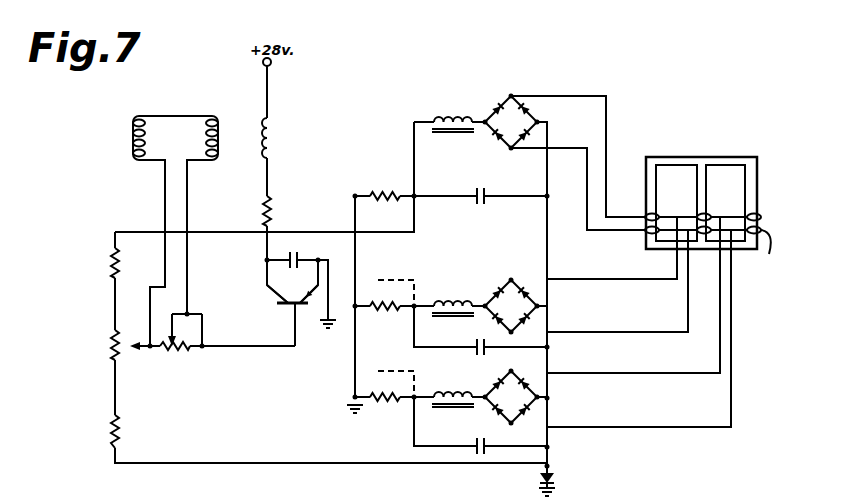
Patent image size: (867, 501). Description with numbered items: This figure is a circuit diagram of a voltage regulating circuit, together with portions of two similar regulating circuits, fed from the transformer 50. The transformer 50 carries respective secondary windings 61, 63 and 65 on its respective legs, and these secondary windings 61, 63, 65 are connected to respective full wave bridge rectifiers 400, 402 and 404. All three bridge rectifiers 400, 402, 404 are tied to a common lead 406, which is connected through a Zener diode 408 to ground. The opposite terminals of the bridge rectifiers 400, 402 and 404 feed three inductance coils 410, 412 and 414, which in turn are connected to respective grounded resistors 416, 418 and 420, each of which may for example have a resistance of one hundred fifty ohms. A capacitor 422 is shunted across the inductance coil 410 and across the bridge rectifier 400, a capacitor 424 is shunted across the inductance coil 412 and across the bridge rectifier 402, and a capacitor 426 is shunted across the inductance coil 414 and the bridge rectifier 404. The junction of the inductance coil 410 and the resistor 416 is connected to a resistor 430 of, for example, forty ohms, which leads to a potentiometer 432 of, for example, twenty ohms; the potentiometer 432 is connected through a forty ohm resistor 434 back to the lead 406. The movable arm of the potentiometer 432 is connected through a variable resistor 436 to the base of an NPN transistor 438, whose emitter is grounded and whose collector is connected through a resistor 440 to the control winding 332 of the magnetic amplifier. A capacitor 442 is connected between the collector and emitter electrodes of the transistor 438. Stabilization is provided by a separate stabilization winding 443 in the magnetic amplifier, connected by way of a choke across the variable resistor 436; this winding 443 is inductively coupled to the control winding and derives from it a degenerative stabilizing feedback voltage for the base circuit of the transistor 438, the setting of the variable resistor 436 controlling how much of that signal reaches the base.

The transformer 50 is at (706, 148).
The secondary winding 61 is at (662, 218).
The secondary winding 63 is at (712, 218).
The secondary winding 65 is at (762, 252).
The control winding 332 is at (272, 140).
The full wave bridge rectifier 400 is at (513, 110).
The full wave bridge rectifier 402 is at (521, 290).
The full wave bridge rectifier 404 is at (538, 370).
The common lead 406 is at (550, 413).
The Zener diode 408 is at (552, 478).
The inductance coil 410 is at (470, 106).
The inductance coil 412 is at (470, 292).
The inductance coil 414 is at (468, 386).
The grounded resistor 416 is at (397, 202).
The grounded resistor 418 is at (395, 310).
The grounded resistor 420 is at (397, 401).
The capacitor 422 is at (480, 206).
The capacitor 424 is at (478, 352).
The capacitor 426 is at (476, 444).
The resistor 430 is at (113, 268).
The potentiometer 432 is at (113, 342).
The resistor 434 is at (113, 425).
The variable resistor 436 is at (180, 354).
The NPN transistor 438 is at (305, 307).
The resistor 440 is at (265, 215).
The capacitor 442 is at (299, 256).
The stabilization winding 443 is at (145, 140).